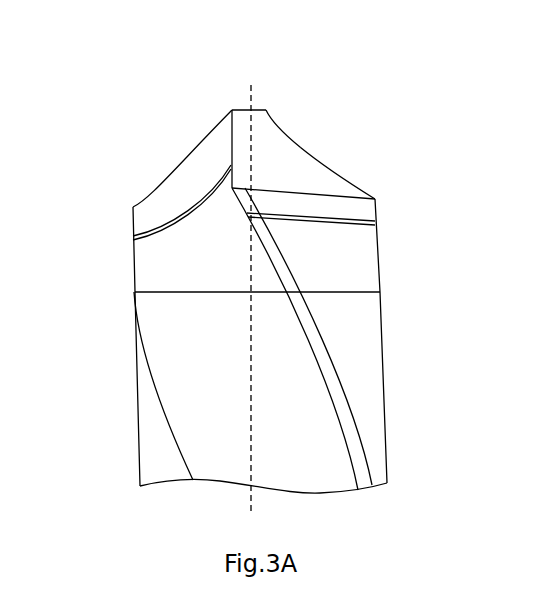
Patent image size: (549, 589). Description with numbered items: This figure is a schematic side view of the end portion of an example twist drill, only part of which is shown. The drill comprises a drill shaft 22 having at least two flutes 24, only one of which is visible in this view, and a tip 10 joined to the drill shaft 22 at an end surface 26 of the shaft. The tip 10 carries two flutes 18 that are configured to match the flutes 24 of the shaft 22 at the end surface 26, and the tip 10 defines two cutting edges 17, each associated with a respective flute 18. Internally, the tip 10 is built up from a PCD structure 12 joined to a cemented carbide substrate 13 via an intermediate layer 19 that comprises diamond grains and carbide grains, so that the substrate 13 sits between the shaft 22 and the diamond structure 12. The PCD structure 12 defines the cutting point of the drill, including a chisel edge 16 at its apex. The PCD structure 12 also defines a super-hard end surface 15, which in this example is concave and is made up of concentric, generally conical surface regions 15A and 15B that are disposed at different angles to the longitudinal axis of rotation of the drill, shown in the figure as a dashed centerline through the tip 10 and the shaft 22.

The tip 10 is at (133, 217).
The PCD structure 12 is at (360, 205).
The cemented carbide substrate 13 is at (355, 273).
The super-hard end surface 15 is at (217, 109).
The conical surface region 15A is at (287, 130).
The conical surface region 15B is at (343, 182).
The chisel edge 16 is at (255, 110).
The cutting edge 17 is at (232, 155).
The flute 18 is at (170, 256).
The intermediate layer 19 is at (375, 223).
The drill shaft 22 is at (368, 400).
The flute 24 is at (202, 395).
The end surface 26 is at (133, 292).